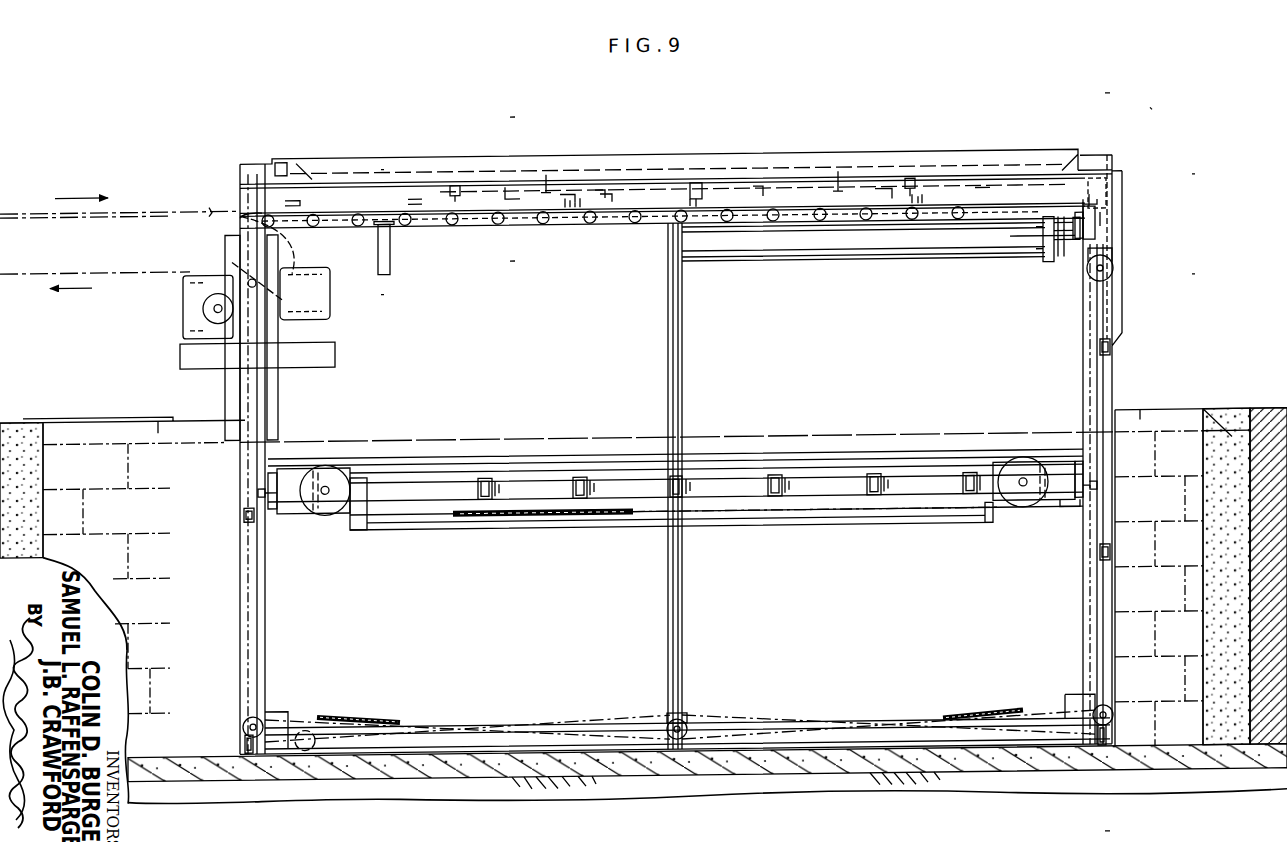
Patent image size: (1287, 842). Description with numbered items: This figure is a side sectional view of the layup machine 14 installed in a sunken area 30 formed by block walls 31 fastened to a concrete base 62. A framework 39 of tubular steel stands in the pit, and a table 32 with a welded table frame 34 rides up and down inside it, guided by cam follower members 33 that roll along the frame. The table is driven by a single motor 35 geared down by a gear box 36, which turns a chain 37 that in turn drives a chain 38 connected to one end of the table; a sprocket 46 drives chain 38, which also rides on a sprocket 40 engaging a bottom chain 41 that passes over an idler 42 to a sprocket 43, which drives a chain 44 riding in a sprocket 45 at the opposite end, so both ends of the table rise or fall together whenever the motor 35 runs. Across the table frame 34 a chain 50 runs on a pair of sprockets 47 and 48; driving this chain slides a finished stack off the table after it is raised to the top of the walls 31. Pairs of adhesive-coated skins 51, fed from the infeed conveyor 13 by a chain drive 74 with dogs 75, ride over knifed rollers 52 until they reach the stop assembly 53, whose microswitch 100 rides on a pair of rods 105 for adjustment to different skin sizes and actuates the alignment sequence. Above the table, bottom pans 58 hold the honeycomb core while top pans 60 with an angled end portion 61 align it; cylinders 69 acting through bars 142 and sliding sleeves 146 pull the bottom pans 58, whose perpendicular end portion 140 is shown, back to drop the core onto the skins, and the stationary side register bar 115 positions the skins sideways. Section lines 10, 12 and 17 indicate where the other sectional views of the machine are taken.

The section line 10- 10 is at (1110, 123).
The section line 12- 12 is at (515, 140).
The infeed conveyor 13 is at (1195, 281).
The layup machine 14 is at (1150, 116).
The section line 17- 17 is at (384, 202).
The sunken area 30 is at (1198, 593).
The block walls 31 is at (1212, 457).
The table 32 is at (814, 542).
The cam follower members 33 is at (258, 489).
The table frame 34 is at (420, 503).
The motor 35 is at (192, 301).
The gear box 36 is at (316, 309).
The chain 37 is at (232, 258).
The chain 38 is at (272, 540).
The framework 39 is at (1098, 326).
The sprocket 40 is at (257, 703).
The bottom chain 41 is at (362, 713).
The idler 42 is at (668, 714).
The sprocket 43 is at (1090, 694).
The chain 44 is at (1083, 576).
The sprocket 45 is at (1092, 298).
The sprocket 46 is at (262, 268).
The sprocket 47 is at (330, 463).
The sprocket 48 is at (1030, 463).
The chain 50 is at (505, 514).
The skins 51 is at (150, 204).
The knifed rollers 52 is at (633, 225).
The stop assembly 53 is at (1093, 200).
The bottom pans 58 is at (964, 178).
The top pans 60 is at (820, 168).
The angled end portion 61 is at (1010, 162).
The concrete base 62 is at (705, 776).
The cylinders 69 is at (700, 172).
The chain drive 74 is at (126, 266).
The dogs 75 is at (209, 208).
The microswitch 100 is at (1080, 210).
The rods 105 is at (966, 232).
The stationary side register bar 115 is at (1046, 268).
The perpendicular end portion 140 is at (740, 182).
The bars 142 is at (548, 174).
The sleeves 146 is at (450, 187).